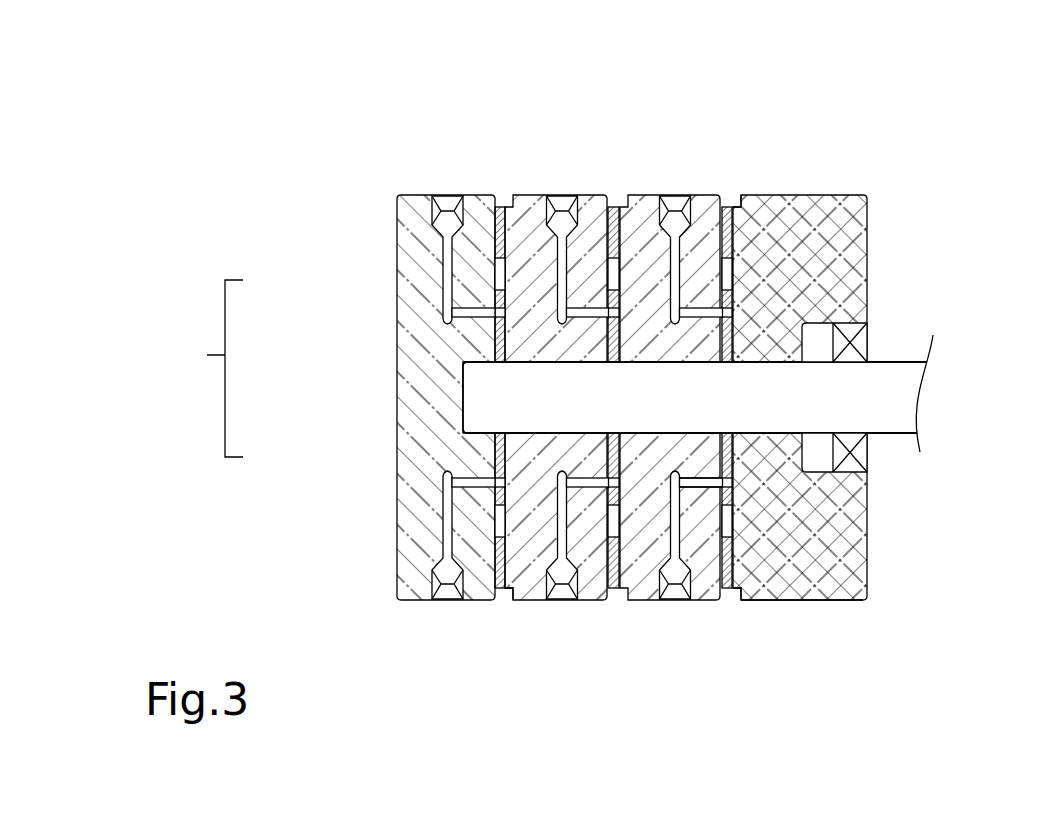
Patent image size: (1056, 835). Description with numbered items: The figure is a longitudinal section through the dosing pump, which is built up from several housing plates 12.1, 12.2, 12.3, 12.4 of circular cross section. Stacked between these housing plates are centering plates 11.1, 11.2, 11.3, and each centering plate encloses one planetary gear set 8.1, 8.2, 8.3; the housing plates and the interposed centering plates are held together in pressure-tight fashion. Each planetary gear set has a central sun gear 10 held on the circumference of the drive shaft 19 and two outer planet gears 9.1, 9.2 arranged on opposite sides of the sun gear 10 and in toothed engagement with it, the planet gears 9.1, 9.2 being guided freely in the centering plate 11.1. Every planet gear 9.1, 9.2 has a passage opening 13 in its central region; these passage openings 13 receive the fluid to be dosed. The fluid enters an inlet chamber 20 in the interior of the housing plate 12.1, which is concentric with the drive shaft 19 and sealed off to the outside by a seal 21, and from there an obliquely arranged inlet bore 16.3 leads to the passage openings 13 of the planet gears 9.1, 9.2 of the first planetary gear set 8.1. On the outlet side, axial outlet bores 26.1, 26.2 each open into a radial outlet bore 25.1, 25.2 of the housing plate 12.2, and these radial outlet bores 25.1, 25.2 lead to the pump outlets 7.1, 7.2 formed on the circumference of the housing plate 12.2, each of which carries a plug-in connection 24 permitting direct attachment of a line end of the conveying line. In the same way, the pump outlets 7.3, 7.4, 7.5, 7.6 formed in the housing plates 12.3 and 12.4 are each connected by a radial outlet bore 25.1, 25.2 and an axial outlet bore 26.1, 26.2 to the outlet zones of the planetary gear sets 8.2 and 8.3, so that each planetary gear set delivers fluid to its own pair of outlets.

The pump outlet 7.1 is at (678, 600).
The pump outlet 7.2 is at (677, 205).
The pump outlet 7.3 is at (560, 600).
The pump outlet 7.4 is at (563, 203).
The pump outlet 7.5 is at (442, 600).
The pump outlet 7.6 is at (450, 196).
The planetary gear set 8.1 is at (760, 485).
The planetary gear set 8.2 is at (680, 472).
The planetary gear set 8.3 is at (197, 368).
The planet gear 9.1 is at (497, 545).
The planet gear 9.2 is at (497, 247).
The sun gear 10 is at (495, 447).
The centering plate 11.1 is at (733, 207).
The centering plate 11.2 is at (617, 207).
The centering plate 11.3 is at (502, 207).
The housing plate 12.1 is at (838, 218).
The housing plate 12.2 is at (710, 207).
The housing plate 12.3 is at (531, 196).
The housing plate 12.4 is at (422, 196).
The passage opening 13 is at (737, 272).
The inlet bore 16.3 is at (838, 585).
The drive shaft 19 is at (907, 410).
The inlet chamber 20 is at (868, 326).
The seal 21 is at (930, 376).
The plug-in connection 24 is at (575, 488).
The radial outlet bore 25.1 is at (580, 535).
The radial outlet bore 25.2 is at (800, 250).
The axial outlet bore 26.1 is at (603, 600).
The axial outlet bore 26.2 is at (735, 296).